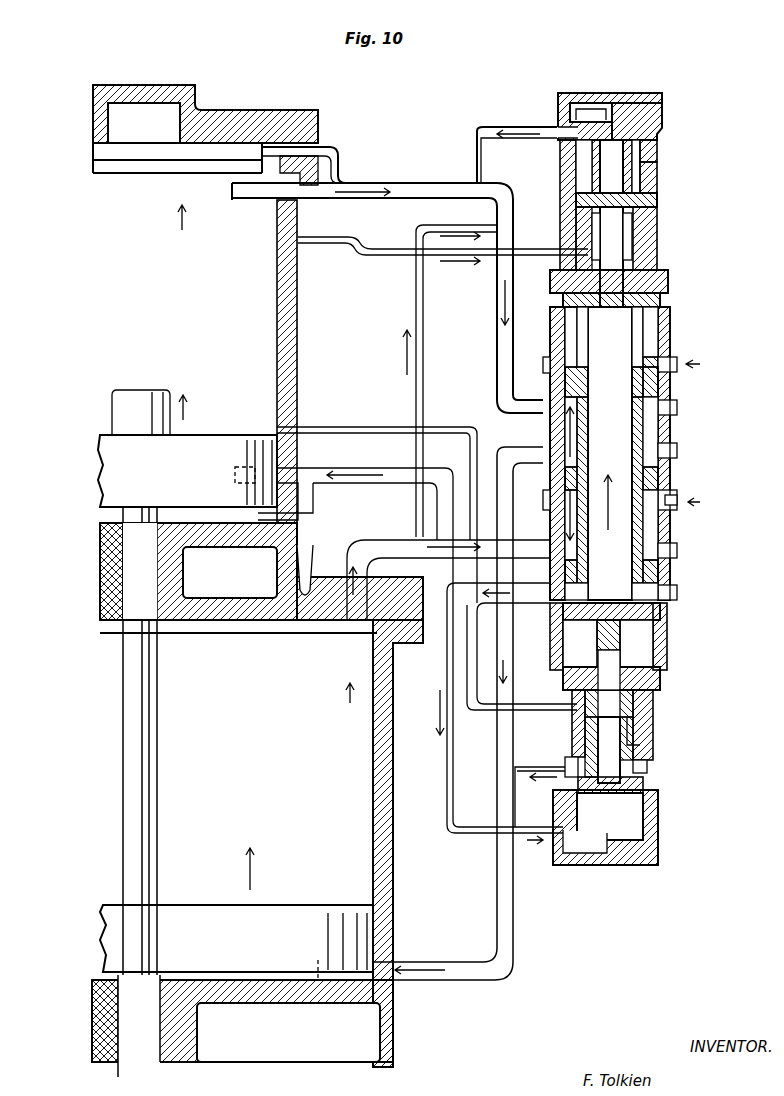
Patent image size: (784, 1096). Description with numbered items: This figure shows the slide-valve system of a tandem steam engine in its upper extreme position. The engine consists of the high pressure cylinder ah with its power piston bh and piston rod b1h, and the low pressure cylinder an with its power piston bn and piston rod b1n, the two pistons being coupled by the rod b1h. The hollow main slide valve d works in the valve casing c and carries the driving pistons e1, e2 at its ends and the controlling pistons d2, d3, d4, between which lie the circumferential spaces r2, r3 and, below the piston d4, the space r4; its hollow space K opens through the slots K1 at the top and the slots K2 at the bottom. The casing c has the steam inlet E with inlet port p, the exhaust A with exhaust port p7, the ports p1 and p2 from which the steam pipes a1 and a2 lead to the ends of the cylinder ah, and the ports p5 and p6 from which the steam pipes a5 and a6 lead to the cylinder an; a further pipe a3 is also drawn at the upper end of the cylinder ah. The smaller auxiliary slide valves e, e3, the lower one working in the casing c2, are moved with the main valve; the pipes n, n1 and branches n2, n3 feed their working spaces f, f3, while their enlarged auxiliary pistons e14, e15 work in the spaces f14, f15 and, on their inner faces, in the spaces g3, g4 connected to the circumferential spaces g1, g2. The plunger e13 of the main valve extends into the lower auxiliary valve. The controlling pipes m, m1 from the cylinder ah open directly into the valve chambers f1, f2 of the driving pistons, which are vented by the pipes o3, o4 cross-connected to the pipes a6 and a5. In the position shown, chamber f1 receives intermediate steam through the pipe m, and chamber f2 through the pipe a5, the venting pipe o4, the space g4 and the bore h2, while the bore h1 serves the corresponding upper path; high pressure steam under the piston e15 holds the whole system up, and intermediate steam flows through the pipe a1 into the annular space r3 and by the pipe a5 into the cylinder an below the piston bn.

The high pressure cylinder ah is at (278, 280).
The passage a3 is at (338, 152).
The steam pipe a1 is at (392, 203).
The pipe n is at (485, 126).
The controlling pipe m is at (360, 257).
The venting pipe o3 is at (416, 303).
The power piston bh is at (203, 447).
The piston rod b1h is at (160, 660).
The low pressure cylinder an is at (376, 659).
The power piston bn is at (280, 917).
The piston rod b1n is at (160, 1023).
The controlling pipe m1 is at (352, 433).
The steam pipe a2 is at (356, 484).
The pipe n1 is at (455, 834).
The steam pipe a6 is at (461, 530).
The steam pipe a5 is at (514, 906).
The venting pipe o4 is at (535, 768).
The branch pipe n2 is at (598, 110).
The auxiliary piston e14 is at (635, 124).
The valve casing c is at (549, 322).
The circumferential space g1 is at (582, 178).
The working space g3 is at (638, 182).
The working space f14 is at (650, 148).
The auxiliary slide valve casing c2 is at (652, 167).
The working space f is at (645, 208).
The auxiliary slide valve e is at (628, 232).
The bore h1 is at (650, 262).
The driving piston e2 is at (612, 272).
The valve chamber f1 is at (645, 305).
The hollow space K is at (610, 453).
The slots K1 is at (633, 355).
The driving piston e1 is at (652, 333).
The circumferential space r2 is at (655, 346).
The inlet port p is at (678, 352).
The steam inlet passage E is at (700, 364).
The main slide valve d is at (633, 380).
The controlling piston d2 is at (658, 390).
The port p1 is at (678, 408).
The circumferential space r3 is at (653, 435).
The port p5 is at (678, 452).
The controlling piston d3 is at (658, 478).
The exhaust pipe A is at (700, 502).
The exhaust port p7 is at (680, 508).
The circumferential space r4 is at (653, 525).
The port p6 is at (678, 550).
The controlling piston d4 is at (653, 572).
The port p2 is at (678, 592).
The slots K2 is at (632, 592).
The valve chamber f2 is at (640, 638).
The working space f3 is at (648, 680).
The auxiliary slide valve e3 is at (610, 700).
The bore h2 is at (652, 728).
The plunger e13 is at (612, 740).
The circumferential space g2 is at (584, 778).
The working space g4 is at (648, 766).
The auxiliary piston e15 is at (640, 788).
The working space f15 is at (640, 824).
The branch pipe n3 is at (590, 866).